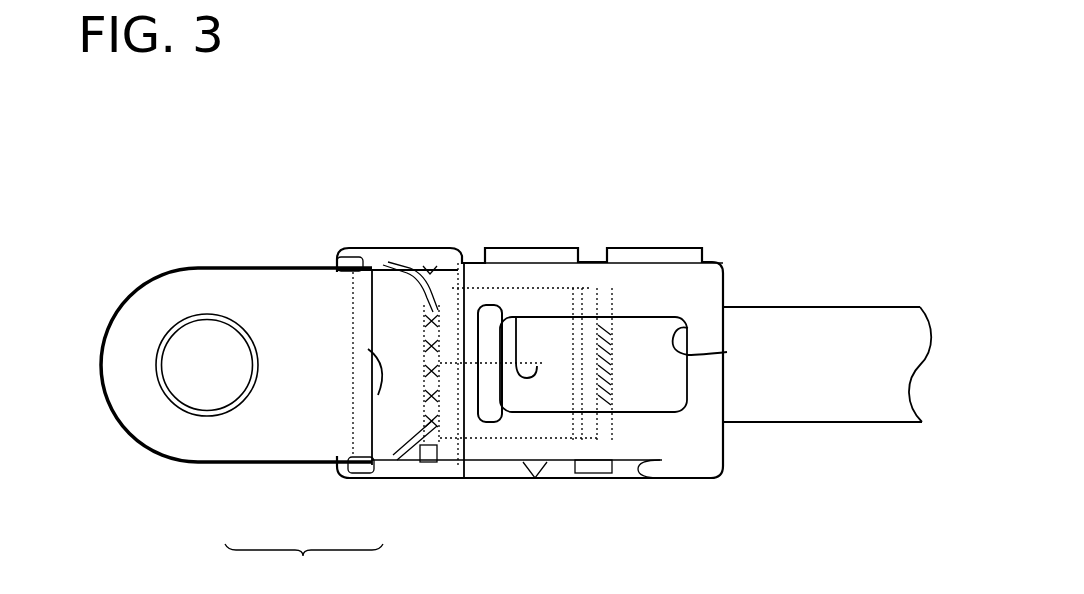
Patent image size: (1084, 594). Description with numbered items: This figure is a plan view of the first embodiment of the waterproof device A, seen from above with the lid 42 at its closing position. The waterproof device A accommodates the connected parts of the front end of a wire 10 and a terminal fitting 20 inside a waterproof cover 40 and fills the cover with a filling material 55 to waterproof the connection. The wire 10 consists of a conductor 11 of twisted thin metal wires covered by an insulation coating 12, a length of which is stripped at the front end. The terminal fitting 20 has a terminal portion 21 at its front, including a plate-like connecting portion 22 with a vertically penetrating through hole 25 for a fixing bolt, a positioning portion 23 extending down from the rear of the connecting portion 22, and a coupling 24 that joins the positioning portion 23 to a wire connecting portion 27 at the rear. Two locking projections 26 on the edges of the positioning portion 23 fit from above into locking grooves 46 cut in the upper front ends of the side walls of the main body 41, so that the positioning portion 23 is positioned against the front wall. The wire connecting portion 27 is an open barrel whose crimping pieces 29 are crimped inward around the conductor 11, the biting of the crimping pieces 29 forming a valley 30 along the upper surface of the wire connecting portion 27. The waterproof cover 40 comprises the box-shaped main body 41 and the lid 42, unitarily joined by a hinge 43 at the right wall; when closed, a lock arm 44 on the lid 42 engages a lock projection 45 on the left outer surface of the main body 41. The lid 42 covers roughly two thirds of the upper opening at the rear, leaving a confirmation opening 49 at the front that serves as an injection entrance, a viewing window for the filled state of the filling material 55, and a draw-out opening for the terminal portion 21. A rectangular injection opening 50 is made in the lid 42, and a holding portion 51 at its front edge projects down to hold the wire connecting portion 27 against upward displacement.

The wire 10 is at (873, 434).
The conductor 11 is at (440, 465).
The insulation coating 12 is at (809, 393).
The terminal fitting 20 is at (277, 236).
The terminal portion 21 is at (304, 565).
The plate-like connecting portion 22 is at (246, 440).
The positioning portion 23 is at (378, 395).
The coupling 24 is at (395, 408).
The through hole 25 is at (205, 332).
The locking projections 26 is at (352, 266).
The wire connecting portion 27 is at (470, 265).
The crimping pieces 29 is at (548, 290).
The valley 30 is at (516, 317).
The waterproof cover 40 is at (755, 260).
The main body 41 is at (420, 470).
The lid 42 is at (703, 280).
The hinge 43 is at (618, 249).
The lock arm 44 is at (628, 473).
The lock projection 45 is at (592, 473).
The locking grooves 46 is at (378, 268).
The confirmation opening 49 is at (430, 266).
The injection opening 50 is at (727, 352).
The holding portion 51 is at (475, 392).
The filling material 55 is at (633, 337).
The waterproof device A is at (779, 192).